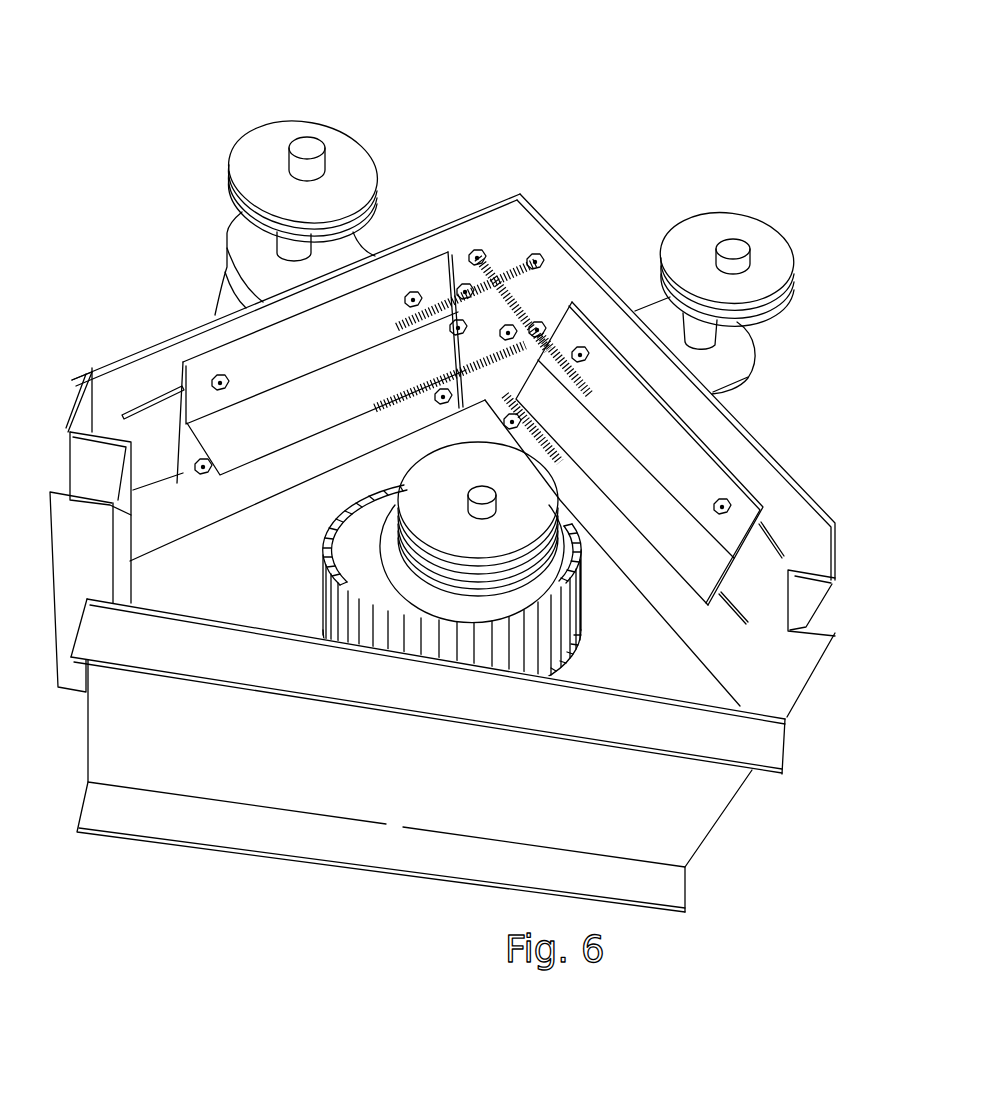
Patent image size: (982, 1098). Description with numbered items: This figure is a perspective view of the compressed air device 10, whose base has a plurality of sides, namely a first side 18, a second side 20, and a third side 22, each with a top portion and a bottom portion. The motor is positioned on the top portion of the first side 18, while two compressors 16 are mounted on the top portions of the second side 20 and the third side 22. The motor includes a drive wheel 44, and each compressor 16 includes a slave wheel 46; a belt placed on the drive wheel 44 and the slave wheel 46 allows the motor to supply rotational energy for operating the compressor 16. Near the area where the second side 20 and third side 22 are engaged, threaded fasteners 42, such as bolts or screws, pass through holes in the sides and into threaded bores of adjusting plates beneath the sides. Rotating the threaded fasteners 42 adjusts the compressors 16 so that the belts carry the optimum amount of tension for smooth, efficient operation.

The compressed air device 10 is at (640, 92).
The compressor 16 is at (534, 210).
The first side 18 is at (307, 782).
The second side 20 is at (148, 365).
The third side 22 is at (819, 499).
The threaded fastener 42 is at (495, 258).
The drive wheel 44 is at (447, 508).
The slave wheel 46 is at (280, 138).